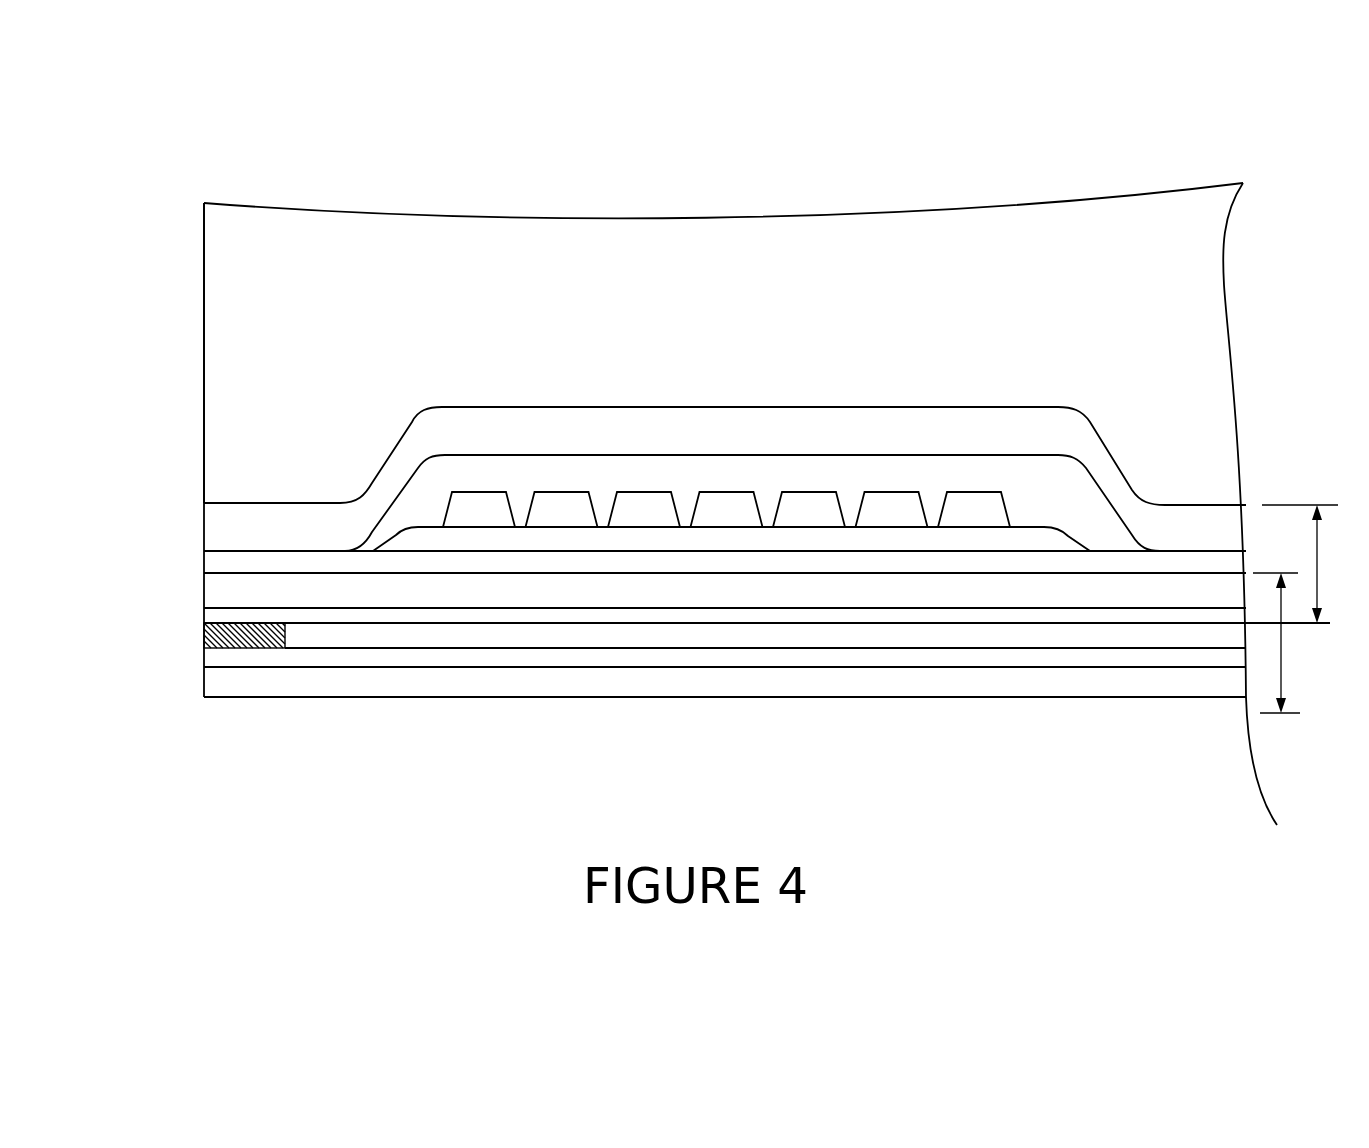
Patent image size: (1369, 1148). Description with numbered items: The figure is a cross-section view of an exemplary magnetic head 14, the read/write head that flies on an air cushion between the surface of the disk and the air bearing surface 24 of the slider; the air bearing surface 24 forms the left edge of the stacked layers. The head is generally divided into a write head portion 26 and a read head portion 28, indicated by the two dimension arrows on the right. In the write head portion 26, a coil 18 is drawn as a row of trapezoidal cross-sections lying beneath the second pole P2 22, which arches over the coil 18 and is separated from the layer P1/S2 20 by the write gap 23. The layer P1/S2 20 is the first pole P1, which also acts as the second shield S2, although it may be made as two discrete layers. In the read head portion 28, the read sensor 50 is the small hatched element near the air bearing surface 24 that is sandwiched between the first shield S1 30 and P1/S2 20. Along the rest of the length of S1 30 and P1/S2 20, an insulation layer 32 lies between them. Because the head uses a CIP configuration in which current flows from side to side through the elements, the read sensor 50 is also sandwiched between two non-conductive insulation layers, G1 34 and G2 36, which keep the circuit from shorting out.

The magnetic head 14 is at (160, 233).
The coil 18 is at (548, 507).
The P1/S2 20 is at (532, 423).
The second pole P2 22 is at (225, 523).
The write gap 23 is at (204, 565).
The air bearing surface 24 is at (192, 311).
The write head portion 26 is at (1318, 582).
The read head portion 28 is at (1284, 677).
The first shield S1 30 is at (225, 678).
The insulation layer 32 is at (420, 637).
The G1 insulation layer 34 is at (204, 614).
The G2 insulation layer 36 is at (204, 656).
The read sensor 50 is at (204, 637).